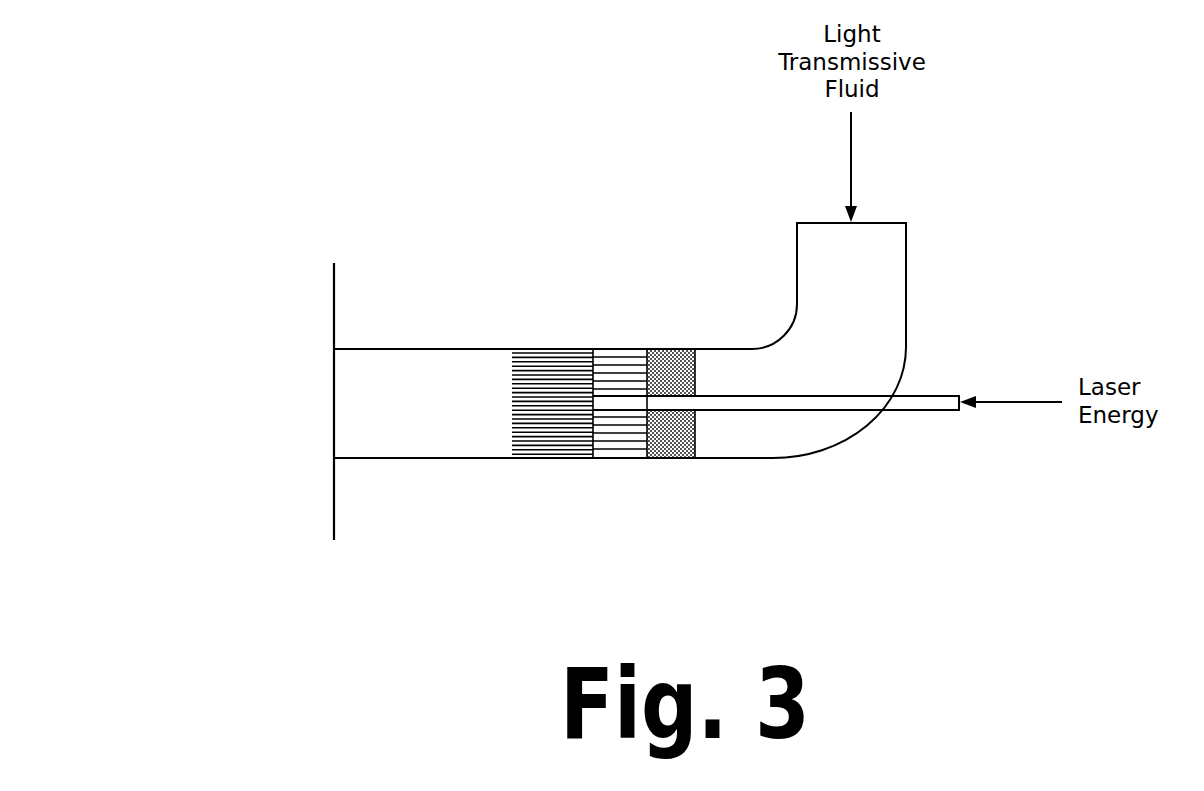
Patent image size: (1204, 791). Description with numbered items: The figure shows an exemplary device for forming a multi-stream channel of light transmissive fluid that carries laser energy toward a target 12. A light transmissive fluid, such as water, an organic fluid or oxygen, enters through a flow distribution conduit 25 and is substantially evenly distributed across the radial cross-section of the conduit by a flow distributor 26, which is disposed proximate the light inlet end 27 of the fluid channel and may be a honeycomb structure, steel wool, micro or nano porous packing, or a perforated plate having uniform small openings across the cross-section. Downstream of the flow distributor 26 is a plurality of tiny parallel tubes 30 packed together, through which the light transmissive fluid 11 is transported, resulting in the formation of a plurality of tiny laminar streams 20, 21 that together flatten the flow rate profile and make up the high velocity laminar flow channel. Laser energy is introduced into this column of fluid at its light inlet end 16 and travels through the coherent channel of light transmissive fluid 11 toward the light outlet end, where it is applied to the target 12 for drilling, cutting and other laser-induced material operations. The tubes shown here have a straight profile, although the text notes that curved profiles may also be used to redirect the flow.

The light transmissive fluid channel 11 is at (440, 349).
The target 12 is at (335, 518).
The light inlet end 16 is at (958, 395).
The tiny laminar streams 20 is at (512, 459).
The tiny laminar streams 21 is at (573, 459).
The flow distribution conduit 25 is at (908, 255).
The flow distributor 26 is at (678, 358).
The light inlet end of the light transmissive fluid channel 27 is at (577, 349).
The tiny parallel tubes 30 is at (617, 438).